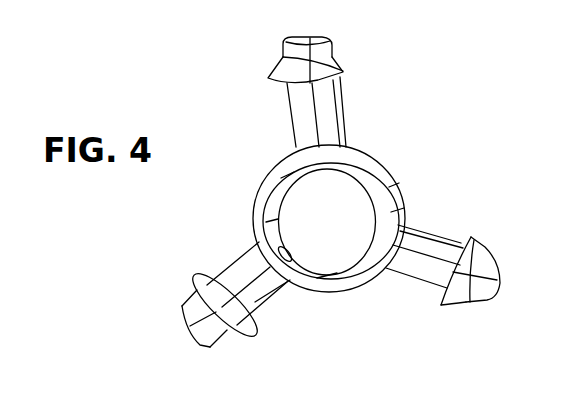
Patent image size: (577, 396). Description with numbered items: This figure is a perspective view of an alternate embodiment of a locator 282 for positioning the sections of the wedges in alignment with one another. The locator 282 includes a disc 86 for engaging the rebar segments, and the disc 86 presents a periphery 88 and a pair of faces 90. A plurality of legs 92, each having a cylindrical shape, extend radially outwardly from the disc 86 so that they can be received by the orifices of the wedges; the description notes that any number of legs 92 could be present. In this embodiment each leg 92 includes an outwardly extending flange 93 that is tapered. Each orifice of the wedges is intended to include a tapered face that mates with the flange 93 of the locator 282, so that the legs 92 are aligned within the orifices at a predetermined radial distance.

The disc 86 is at (258, 198).
The periphery 88 is at (395, 180).
The face 90 is at (358, 272).
The leg 92 is at (300, 127).
The flange 93 is at (345, 73).
The locator 282 is at (402, 167).